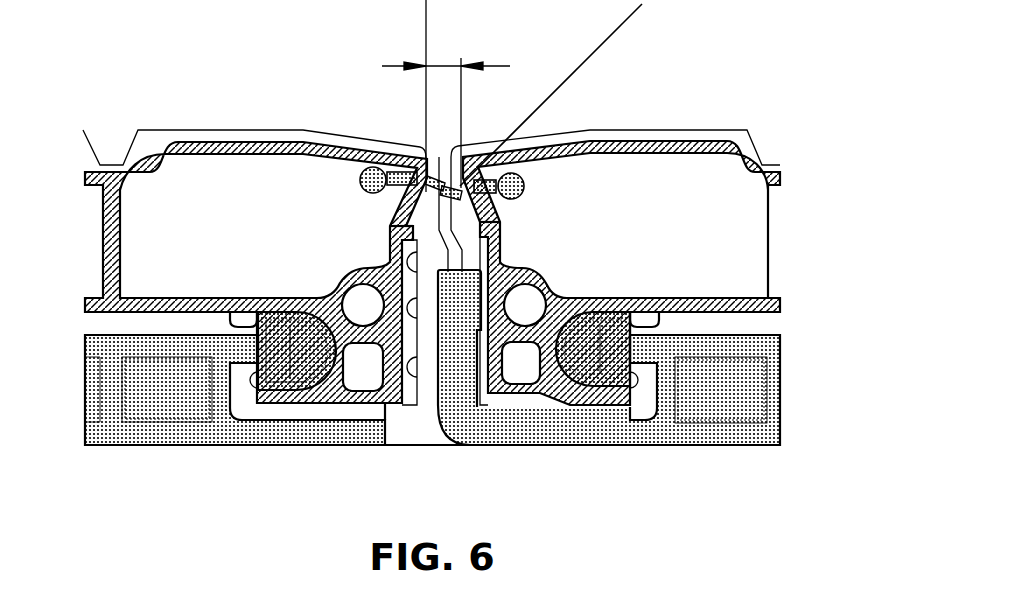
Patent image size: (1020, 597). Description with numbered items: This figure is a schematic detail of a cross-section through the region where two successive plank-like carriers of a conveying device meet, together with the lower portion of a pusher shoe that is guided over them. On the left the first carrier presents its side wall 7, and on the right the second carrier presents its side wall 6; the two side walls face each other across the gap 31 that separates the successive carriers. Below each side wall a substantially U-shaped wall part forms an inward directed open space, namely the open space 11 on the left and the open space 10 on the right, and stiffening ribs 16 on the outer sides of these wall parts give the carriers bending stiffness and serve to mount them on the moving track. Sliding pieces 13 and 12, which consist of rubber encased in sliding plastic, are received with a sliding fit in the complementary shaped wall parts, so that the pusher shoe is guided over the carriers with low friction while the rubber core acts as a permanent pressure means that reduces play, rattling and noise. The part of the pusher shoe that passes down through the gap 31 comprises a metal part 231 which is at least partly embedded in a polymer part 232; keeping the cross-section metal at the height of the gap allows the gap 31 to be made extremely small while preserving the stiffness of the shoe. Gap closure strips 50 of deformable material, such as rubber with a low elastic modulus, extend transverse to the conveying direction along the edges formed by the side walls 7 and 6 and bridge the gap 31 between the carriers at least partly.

The gap 31 is at (442, 64).
The gap closure strip 50 is at (360, 182).
The metal part 231 is at (440, 212).
The side wall 7 is at (390, 243).
The side wall 6 is at (500, 242).
The open space 11 is at (254, 241).
The open space 10 is at (659, 241).
The stiffening rib 16 is at (119, 247).
The sliding piece 13 is at (292, 365).
The polymer part 232 is at (458, 357).
The sliding piece 12 is at (596, 357).